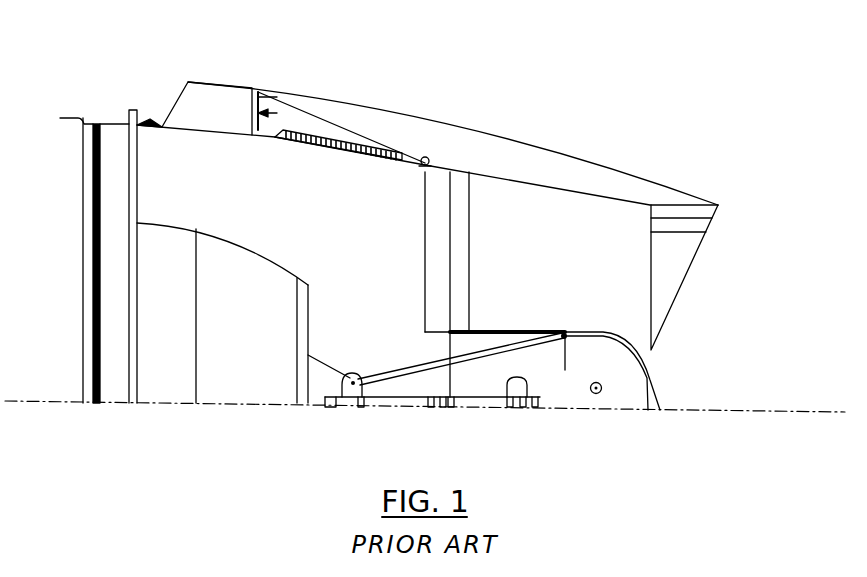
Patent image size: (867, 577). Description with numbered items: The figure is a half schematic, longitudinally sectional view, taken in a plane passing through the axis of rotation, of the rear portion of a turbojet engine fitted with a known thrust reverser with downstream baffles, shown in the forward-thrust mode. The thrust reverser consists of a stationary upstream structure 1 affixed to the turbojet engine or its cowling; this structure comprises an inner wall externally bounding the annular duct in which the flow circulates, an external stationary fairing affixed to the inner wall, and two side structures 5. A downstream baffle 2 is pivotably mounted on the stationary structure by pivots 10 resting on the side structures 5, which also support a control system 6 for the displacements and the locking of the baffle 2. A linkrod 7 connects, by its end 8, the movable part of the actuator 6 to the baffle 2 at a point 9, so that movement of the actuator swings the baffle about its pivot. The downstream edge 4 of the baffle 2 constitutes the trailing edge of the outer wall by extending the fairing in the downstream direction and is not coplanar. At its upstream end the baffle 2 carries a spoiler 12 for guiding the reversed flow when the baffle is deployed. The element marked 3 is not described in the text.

The stationary upstream structure 1 is at (225, 108).
The downstream baffle 2 is at (475, 148).
The hinged door 3 is at (338, 127).
The downstream edge 4 is at (672, 297).
The side structure 5 is at (638, 378).
The control system 6 is at (386, 403).
The linkrod 7 is at (480, 356).
The linkrod end 8 is at (349, 396).
The connection point 9 is at (565, 340).
The pivot 10 is at (596, 394).
The spoiler 12 is at (270, 112).